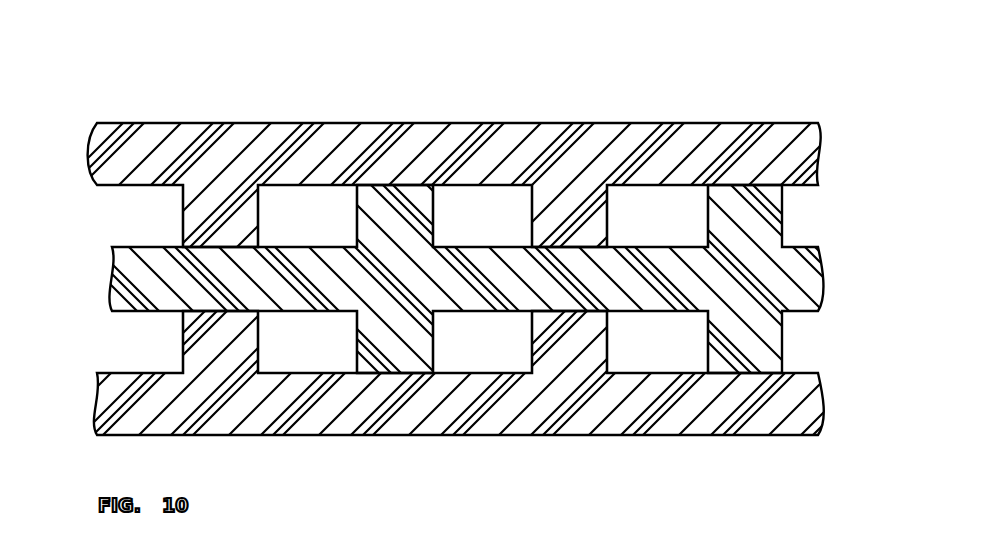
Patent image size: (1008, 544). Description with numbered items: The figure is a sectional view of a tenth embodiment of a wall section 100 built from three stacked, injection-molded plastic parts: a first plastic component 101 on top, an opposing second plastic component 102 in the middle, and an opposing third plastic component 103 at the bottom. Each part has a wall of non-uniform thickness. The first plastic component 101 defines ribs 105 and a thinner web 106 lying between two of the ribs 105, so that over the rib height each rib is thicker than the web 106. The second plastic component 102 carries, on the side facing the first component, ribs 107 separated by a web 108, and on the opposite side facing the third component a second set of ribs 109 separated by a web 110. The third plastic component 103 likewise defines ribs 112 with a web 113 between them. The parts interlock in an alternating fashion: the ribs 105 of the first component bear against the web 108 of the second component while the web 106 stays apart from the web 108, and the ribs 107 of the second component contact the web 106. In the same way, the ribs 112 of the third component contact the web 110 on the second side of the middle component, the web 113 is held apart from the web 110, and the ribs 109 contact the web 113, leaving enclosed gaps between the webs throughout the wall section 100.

The wall section 100 is at (504, 229).
The first plastic component 101 is at (818, 134).
The second plastic component 102 is at (822, 296).
The third plastic component 103 is at (820, 428).
The ribs 105 is at (183, 226).
The web 106 is at (338, 190).
The ribs 107 is at (437, 216).
The web 108 is at (516, 247).
The ribs 109 is at (435, 347).
The web 110 is at (520, 315).
The ribs 112 is at (183, 353).
The web 113 is at (345, 373).